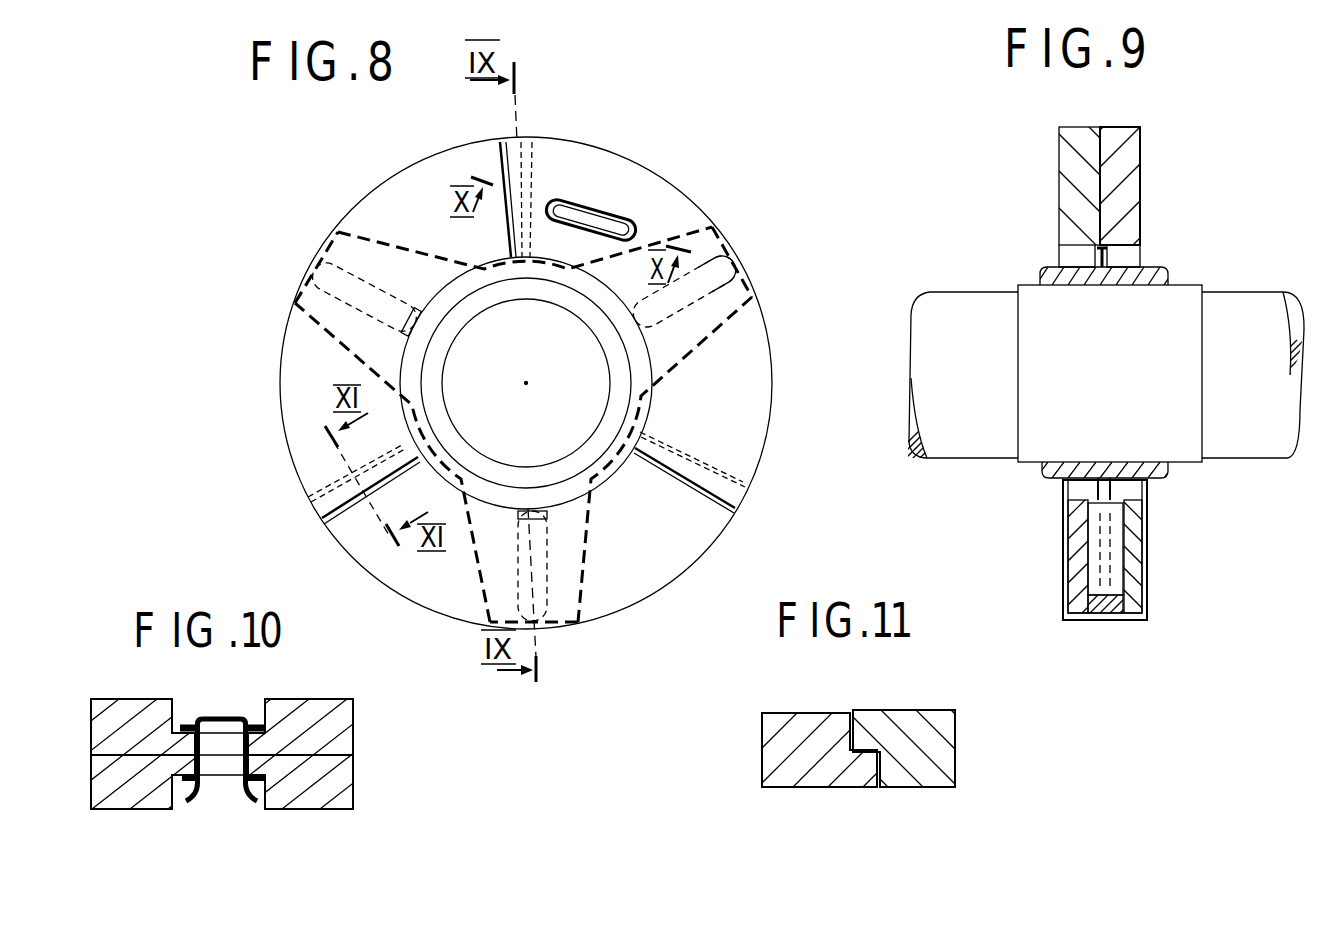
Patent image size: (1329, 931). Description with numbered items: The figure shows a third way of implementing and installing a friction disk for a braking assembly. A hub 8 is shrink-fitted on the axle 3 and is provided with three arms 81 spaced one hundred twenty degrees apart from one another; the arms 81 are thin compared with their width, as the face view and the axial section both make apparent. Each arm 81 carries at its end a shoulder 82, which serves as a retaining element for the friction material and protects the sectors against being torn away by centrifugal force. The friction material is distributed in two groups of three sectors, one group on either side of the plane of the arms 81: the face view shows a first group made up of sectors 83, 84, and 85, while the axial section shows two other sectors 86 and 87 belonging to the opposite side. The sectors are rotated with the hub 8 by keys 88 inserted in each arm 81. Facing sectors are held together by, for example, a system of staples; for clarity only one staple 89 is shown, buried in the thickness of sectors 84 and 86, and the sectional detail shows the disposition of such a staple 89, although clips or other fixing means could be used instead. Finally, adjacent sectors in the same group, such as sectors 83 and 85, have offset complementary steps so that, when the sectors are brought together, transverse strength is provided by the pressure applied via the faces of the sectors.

In FIG. 8, the axle 3 is at (582, 378).
In FIG. 9, the axle 3 is at (967, 312).
In FIG. 8, the hub 8 is at (585, 455).
In FIG. 9, the hub 8 is at (1143, 275).
In FIG. 8, the arm 81 is at (322, 328).
In FIG. 9, the arm 81 is at (1110, 487).
In FIG. 8, the shoulder 82 is at (717, 233).
In FIG. 9, the shoulder 82 is at (1110, 613).
In FIG. 8, the sector 83 is at (302, 431).
In FIG. 11, the sector 83 is at (802, 740).
In FIG. 8, the sector 84 is at (653, 200).
In FIG. 9, the sector 84 is at (1117, 197).
In FIG. 10, the sector 84 is at (318, 723).
In FIG. 8, the sector 85 is at (420, 573).
In FIG. 9, the sector 85 is at (1132, 565).
In FIG. 11, the sector 85 is at (913, 730).
In FIG. 9, the sector 86 is at (1082, 198).
In FIG. 10, the sector 86 is at (327, 793).
In FIG. 9, the sector 87 is at (1073, 583).
In FIG. 8, the key 88 is at (370, 282).
In FIG. 9, the key 88 is at (1097, 550).
In FIG. 8, the staple 89 is at (596, 208).
In FIG. 10, the staple 89 is at (222, 718).